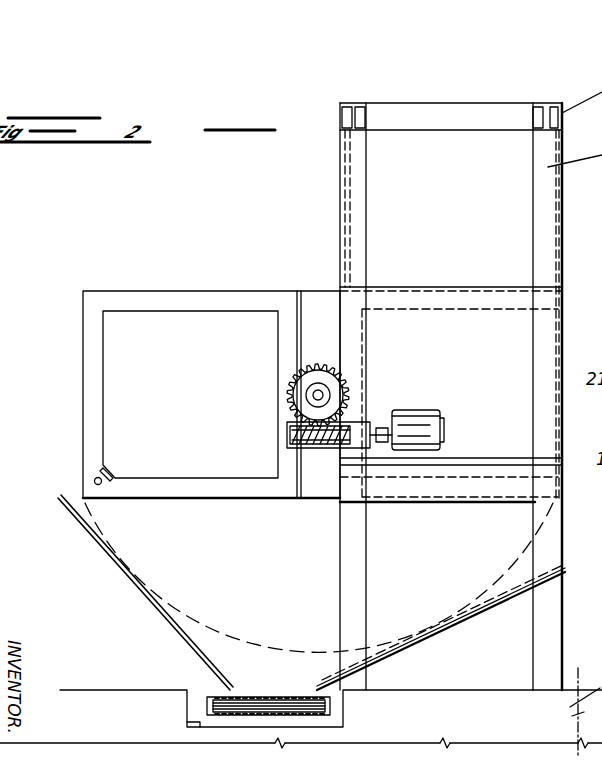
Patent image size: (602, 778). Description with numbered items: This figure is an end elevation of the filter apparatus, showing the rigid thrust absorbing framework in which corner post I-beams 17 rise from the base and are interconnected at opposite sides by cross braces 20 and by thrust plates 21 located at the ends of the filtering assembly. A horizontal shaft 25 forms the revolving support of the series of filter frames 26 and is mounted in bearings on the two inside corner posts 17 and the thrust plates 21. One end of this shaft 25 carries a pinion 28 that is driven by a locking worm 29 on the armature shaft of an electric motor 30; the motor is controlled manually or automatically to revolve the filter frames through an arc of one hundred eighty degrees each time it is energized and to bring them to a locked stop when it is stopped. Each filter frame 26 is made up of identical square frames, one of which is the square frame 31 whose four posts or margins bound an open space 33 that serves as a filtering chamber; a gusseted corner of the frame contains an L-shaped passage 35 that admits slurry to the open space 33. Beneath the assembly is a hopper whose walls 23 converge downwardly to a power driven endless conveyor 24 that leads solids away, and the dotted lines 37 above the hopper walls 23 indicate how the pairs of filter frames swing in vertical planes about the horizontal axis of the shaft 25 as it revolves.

The corner post I-beam 17 is at (362, 208).
The cross brace 20 is at (440, 118).
The thrust plate 21 is at (418, 287).
The hopper wall 23 is at (130, 574).
The power driven endless conveyor 24 is at (258, 703).
The horizontal shaft 25 is at (314, 395).
The filter frame 26 is at (253, 503).
The pinion 28 is at (315, 364).
The locking worm 29 is at (292, 438).
The electric motor 30 is at (418, 410).
The square frame 31 is at (148, 297).
The open space 33 is at (97, 392).
The L-shaped passage 35 is at (97, 481).
The dotted lines 37 is at (222, 632).